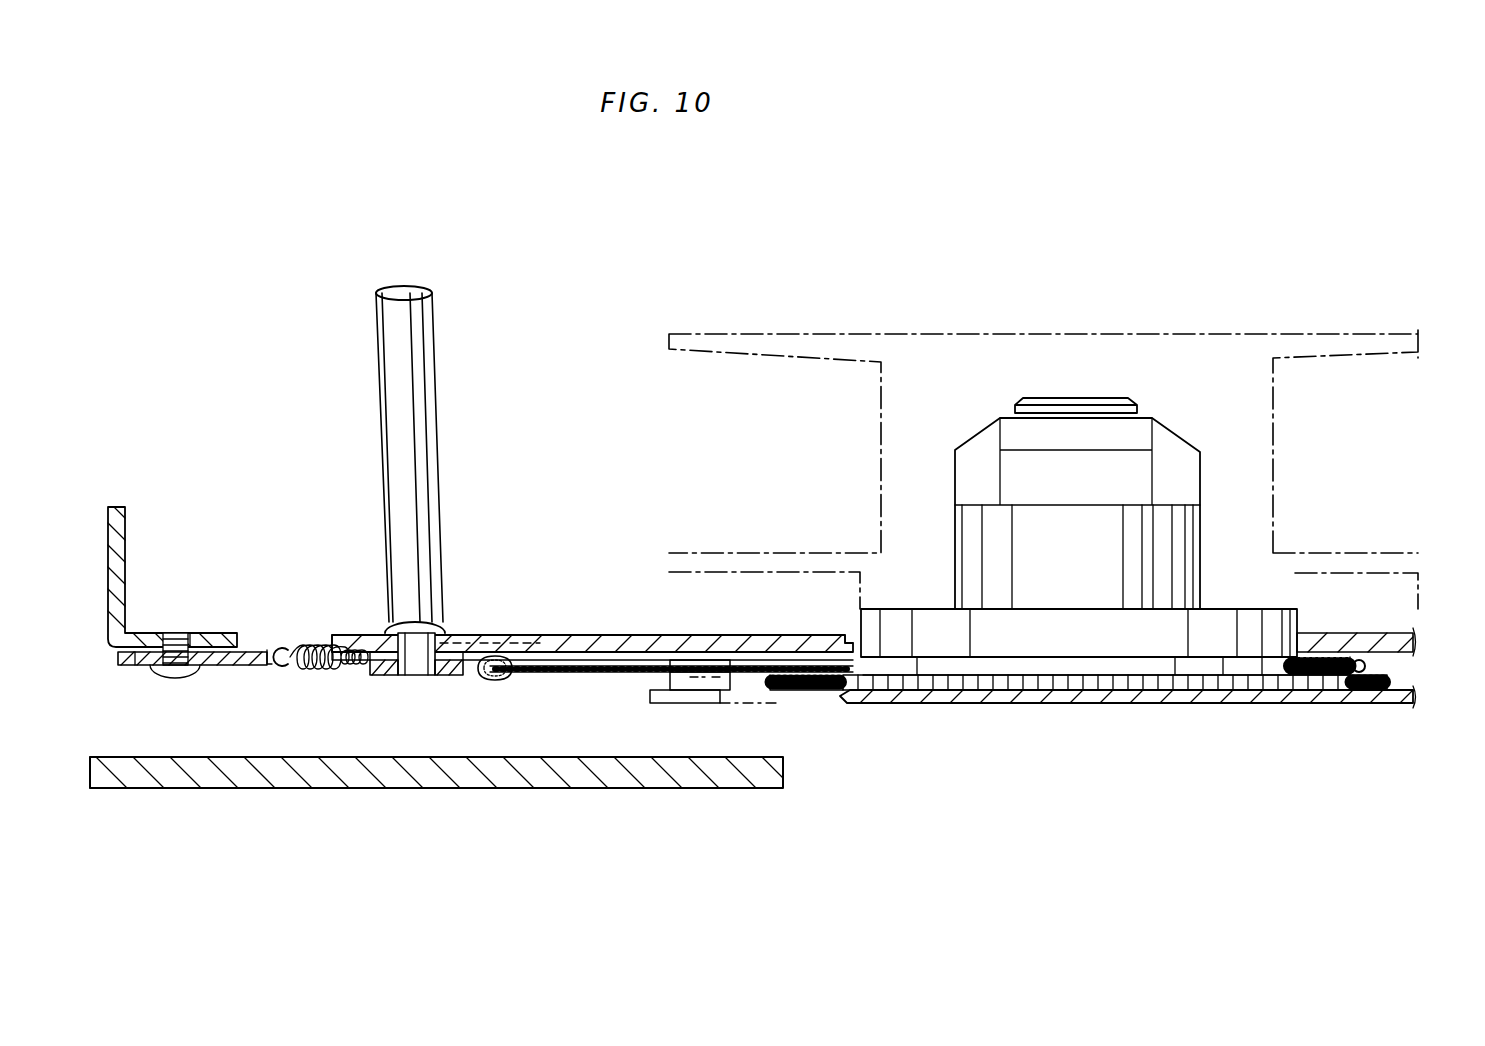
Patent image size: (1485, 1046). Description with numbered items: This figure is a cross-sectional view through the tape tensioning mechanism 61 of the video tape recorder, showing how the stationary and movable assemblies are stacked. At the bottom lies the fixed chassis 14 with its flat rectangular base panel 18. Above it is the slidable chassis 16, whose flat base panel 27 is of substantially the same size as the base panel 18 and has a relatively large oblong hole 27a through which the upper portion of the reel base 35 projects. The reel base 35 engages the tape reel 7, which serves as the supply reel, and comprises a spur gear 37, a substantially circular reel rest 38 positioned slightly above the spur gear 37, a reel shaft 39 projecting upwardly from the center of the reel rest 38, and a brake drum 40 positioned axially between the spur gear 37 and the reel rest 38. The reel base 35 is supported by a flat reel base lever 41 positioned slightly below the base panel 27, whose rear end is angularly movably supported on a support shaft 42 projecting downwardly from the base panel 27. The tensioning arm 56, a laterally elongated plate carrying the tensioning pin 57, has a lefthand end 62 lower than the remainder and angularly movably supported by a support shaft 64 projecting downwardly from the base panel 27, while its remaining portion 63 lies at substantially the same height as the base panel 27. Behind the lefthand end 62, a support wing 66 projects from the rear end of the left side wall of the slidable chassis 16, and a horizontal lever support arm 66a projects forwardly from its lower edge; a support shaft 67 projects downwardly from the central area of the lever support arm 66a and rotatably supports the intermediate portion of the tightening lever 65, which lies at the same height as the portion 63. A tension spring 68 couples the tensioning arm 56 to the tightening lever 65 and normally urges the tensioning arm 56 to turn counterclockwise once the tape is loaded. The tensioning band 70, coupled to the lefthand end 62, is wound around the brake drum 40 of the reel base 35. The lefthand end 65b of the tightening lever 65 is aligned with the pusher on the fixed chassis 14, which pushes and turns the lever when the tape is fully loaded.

The tape reel 7 is at (820, 334).
The fixed chassis 14 is at (480, 778).
The slidable chassis 16 is at (567, 637).
The base panel 18 is at (330, 778).
The base panel 27 is at (623, 645).
The oblong hole 27a is at (845, 630).
The reel base 35 is at (1082, 400).
The spur gear 37 is at (1100, 682).
The reel rest 38 is at (1220, 622).
The reel shaft 39 is at (978, 455).
The brake drum 40 is at (937, 665).
The reel base lever 41 is at (970, 705).
The support shaft 42 is at (655, 690).
The tensioning arm 56 is at (372, 675).
The tensioning pin 57 is at (405, 393).
The tape tensioning mechanism 61 is at (281, 680).
The lefthand end 62 is at (440, 677).
The portion 63 is at (478, 682).
The support shaft 64 is at (410, 677).
The tightening lever 65 is at (246, 668).
The lefthand end 65b is at (128, 668).
The support wing 66 is at (118, 542).
The lever support arm 66a is at (228, 632).
The support shaft 67 is at (173, 640).
The tension spring 68 is at (315, 640).
The tensioning band 70 is at (574, 674).